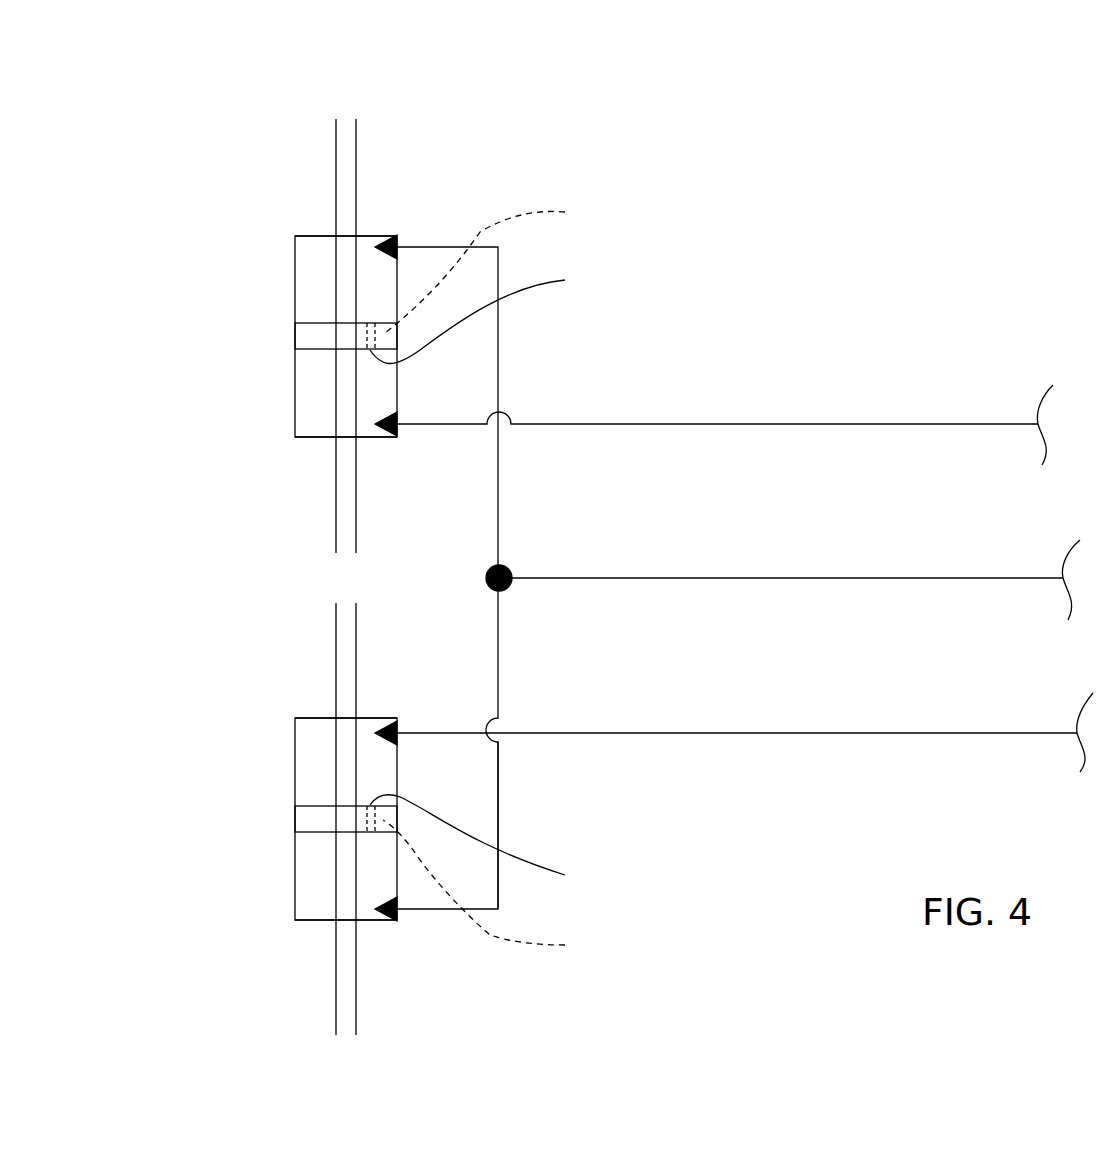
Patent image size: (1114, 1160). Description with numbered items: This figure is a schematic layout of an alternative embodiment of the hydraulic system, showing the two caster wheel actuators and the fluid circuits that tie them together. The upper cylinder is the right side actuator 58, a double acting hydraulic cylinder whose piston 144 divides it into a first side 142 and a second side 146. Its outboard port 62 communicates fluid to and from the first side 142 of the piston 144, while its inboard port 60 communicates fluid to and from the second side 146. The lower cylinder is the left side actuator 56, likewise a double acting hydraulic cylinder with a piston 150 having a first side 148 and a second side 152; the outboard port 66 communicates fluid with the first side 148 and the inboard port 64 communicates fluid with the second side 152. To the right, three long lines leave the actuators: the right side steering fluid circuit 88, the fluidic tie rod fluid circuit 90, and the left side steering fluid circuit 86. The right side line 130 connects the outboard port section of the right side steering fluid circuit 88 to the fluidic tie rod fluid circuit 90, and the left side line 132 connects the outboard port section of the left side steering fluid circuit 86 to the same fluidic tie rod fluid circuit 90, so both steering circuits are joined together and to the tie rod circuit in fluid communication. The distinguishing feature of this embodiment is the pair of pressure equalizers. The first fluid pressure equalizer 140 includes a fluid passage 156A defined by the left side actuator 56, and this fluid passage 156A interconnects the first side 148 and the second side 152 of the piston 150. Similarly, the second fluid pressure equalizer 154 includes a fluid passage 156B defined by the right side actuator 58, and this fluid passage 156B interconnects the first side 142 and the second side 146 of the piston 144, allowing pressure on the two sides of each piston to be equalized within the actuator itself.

The left side actuator 56 is at (295, 897).
The right side actuator 58 is at (295, 285).
The inboard port 60 is at (397, 424).
The outboard port 62 is at (397, 247).
The inboard port 64 is at (397, 733).
The outboard port 66 is at (397, 909).
The left side steering fluid circuit 86 is at (738, 733).
The right side steering fluid circuit 88 is at (757, 424).
The fluidic tie rod fluid circuit 90 is at (713, 578).
The right side line 130 is at (498, 378).
The left side line 132 is at (498, 773).
The first fluid pressure equalizer 140 is at (497, 889).
The first side 142 is at (313, 250).
The piston 144 is at (313, 336).
The second side 146 is at (313, 414).
The first side 148 is at (313, 908).
The piston 150 is at (308, 820).
The second side 152 is at (313, 733).
The second fluid pressure equalizer 154 is at (498, 265).
The fluid passage 156A is at (500, 844).
The fluid passage 156B is at (500, 313).